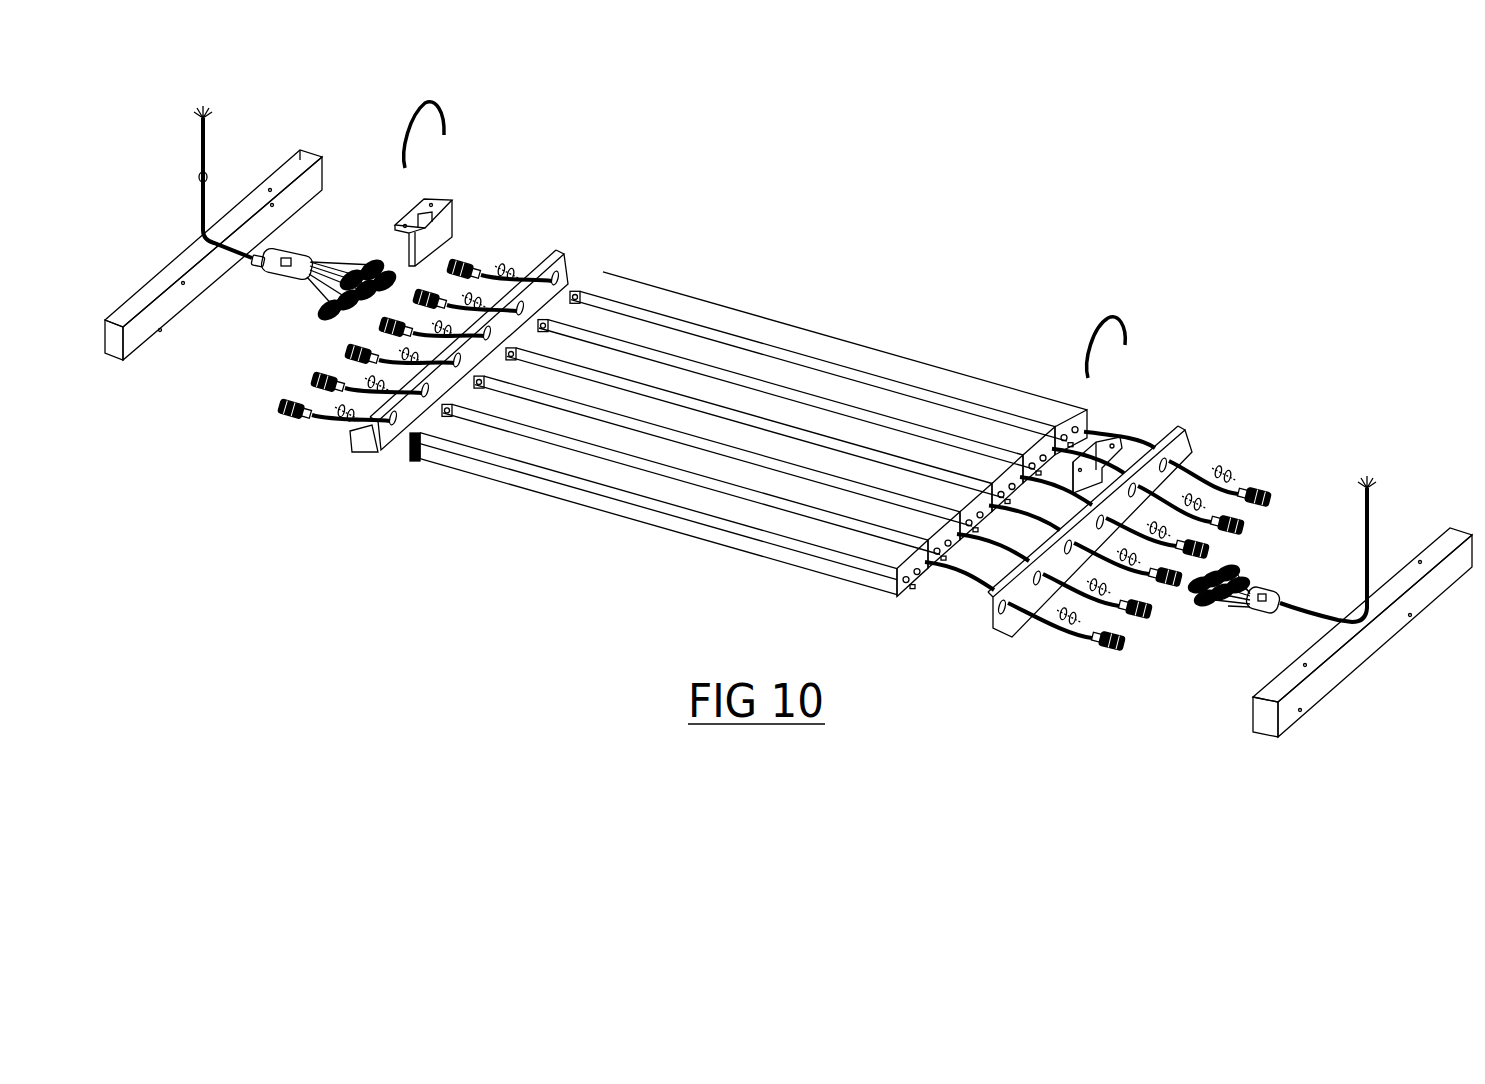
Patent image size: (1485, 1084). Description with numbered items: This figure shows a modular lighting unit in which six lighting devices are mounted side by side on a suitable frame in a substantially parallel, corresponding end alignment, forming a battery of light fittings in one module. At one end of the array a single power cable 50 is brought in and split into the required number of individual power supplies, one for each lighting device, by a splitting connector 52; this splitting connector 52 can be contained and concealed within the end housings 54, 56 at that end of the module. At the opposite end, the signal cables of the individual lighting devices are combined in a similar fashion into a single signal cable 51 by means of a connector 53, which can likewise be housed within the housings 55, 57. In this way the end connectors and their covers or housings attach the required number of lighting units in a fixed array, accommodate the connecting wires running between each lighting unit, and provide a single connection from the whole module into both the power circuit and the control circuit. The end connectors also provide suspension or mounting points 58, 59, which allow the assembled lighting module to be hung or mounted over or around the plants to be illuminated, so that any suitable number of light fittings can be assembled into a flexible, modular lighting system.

The power cable 50 is at (229, 163).
The signal cable 51 is at (1362, 530).
The splitting connector 52 is at (325, 274).
The connector 53 is at (1249, 588).
The end housing 54 is at (140, 346).
The housing 55 is at (1272, 722).
The end housing 56 is at (373, 452).
The housing 57 is at (1000, 627).
The suspension or mounting point 58 is at (443, 222).
The suspension or mounting point 59 is at (1117, 445).